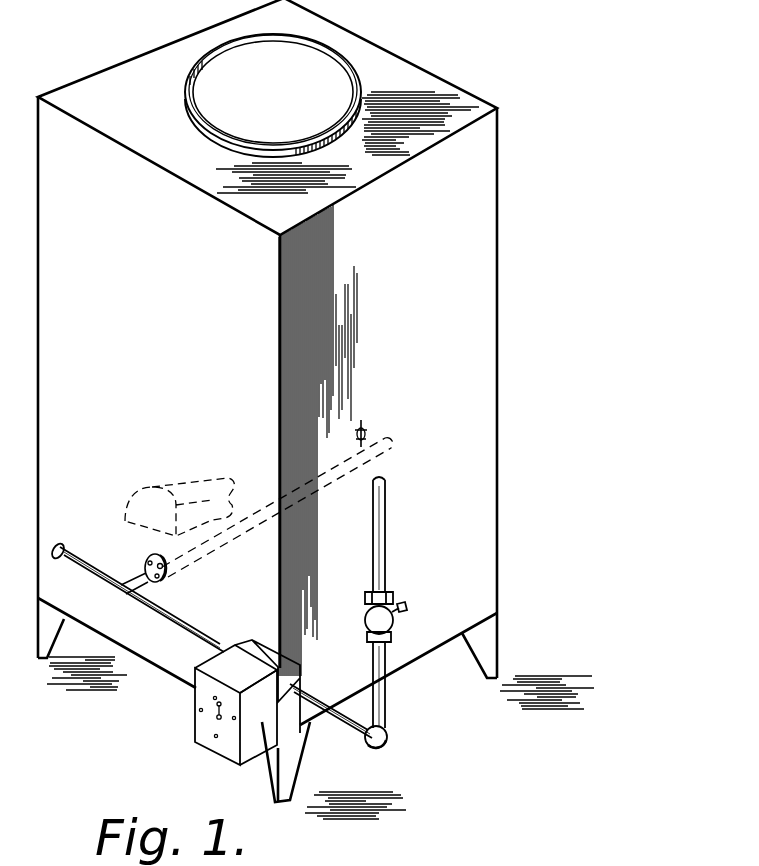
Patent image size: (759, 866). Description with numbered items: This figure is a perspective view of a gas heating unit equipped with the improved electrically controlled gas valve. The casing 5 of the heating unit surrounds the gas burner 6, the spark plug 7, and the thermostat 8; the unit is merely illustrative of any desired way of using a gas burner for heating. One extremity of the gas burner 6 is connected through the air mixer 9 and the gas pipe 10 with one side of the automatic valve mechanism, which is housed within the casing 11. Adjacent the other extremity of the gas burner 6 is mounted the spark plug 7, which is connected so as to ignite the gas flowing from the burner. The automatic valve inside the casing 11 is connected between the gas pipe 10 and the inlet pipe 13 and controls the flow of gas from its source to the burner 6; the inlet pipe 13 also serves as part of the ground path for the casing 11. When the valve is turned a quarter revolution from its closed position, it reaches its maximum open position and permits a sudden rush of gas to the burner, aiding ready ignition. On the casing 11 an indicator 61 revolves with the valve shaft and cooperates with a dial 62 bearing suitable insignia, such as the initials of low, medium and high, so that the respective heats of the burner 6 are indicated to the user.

The casing 5 is at (473, 482).
The gas burner 6 is at (243, 528).
The spark plug 7 is at (370, 424).
The thermostat 8 is at (173, 487).
The air mixer 9 is at (165, 585).
The gas pipe 10 is at (152, 616).
The casing 11 is at (268, 728).
The inlet pipe 13 is at (343, 731).
The indicator 61 is at (217, 718).
The dial 62 is at (205, 688).